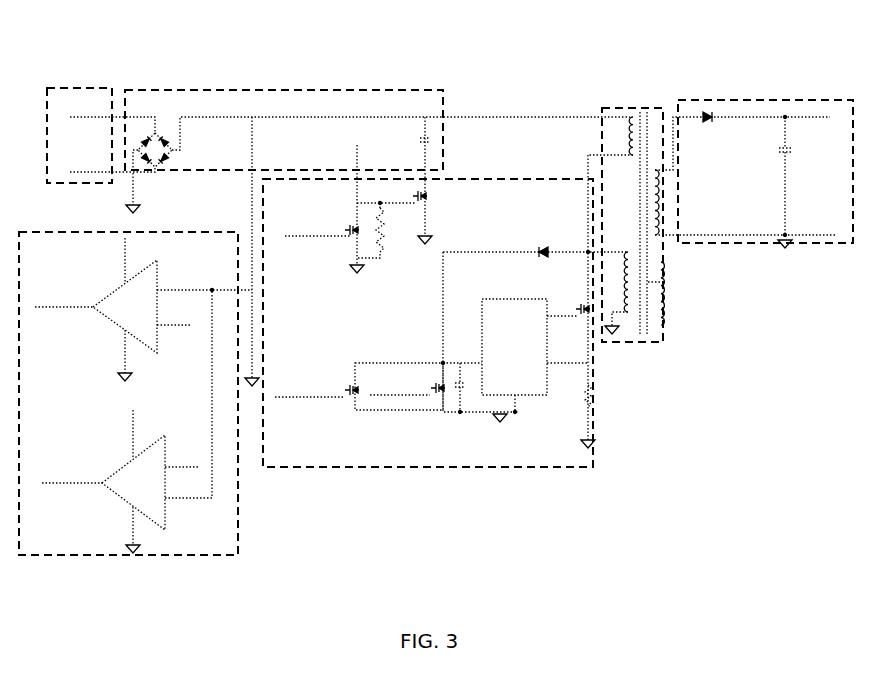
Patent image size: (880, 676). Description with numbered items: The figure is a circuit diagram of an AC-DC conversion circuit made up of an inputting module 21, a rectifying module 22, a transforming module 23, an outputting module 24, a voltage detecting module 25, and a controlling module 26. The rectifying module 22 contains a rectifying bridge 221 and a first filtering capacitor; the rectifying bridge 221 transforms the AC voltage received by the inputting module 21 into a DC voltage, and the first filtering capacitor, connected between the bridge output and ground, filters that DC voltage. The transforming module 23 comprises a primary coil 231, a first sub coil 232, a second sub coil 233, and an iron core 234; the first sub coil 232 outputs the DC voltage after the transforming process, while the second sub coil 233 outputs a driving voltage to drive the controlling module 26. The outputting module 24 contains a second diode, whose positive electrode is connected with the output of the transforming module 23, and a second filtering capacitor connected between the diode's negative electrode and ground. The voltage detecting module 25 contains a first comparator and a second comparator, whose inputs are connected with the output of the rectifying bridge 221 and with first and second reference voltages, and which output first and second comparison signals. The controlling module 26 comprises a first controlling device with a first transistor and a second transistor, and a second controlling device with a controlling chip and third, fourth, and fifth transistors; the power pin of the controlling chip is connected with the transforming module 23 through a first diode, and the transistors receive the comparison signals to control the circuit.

The inputting module 21 is at (90, 107).
The rectifying module 22 is at (350, 139).
The rectifying bridge 221 is at (157, 133).
The transforming module 23 is at (646, 217).
The primary coil 231 is at (633, 126).
The first sub coil 232 is at (660, 237).
The second sub coil 233 is at (628, 336).
The iron core 234 is at (650, 300).
The outputting module 24 is at (740, 114).
The voltage detecting module 25 is at (222, 520).
The controlling module 26 is at (437, 455).